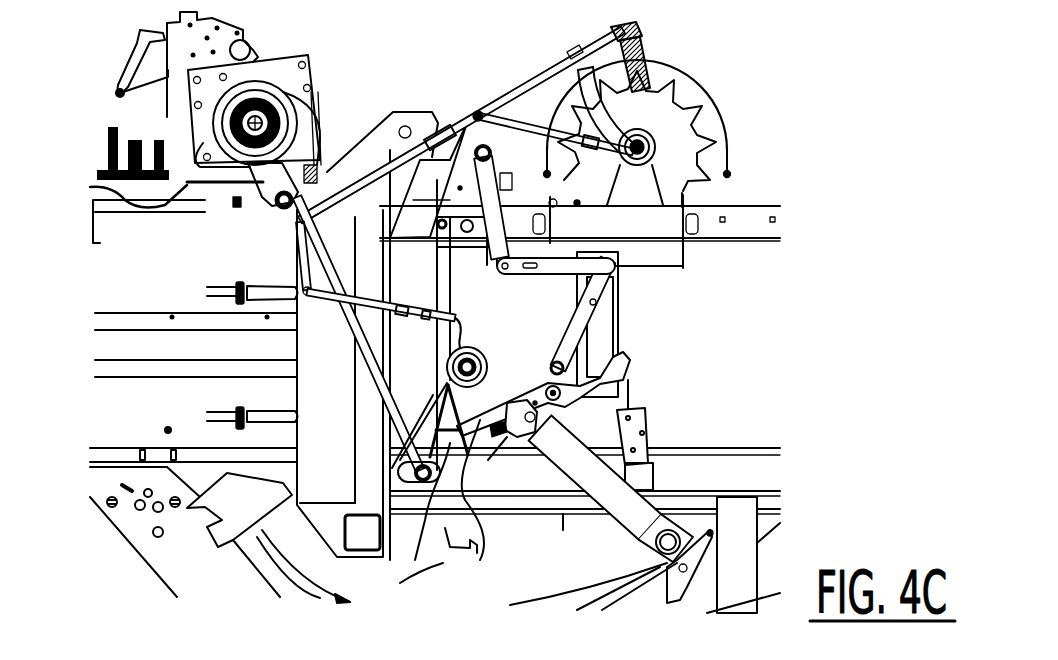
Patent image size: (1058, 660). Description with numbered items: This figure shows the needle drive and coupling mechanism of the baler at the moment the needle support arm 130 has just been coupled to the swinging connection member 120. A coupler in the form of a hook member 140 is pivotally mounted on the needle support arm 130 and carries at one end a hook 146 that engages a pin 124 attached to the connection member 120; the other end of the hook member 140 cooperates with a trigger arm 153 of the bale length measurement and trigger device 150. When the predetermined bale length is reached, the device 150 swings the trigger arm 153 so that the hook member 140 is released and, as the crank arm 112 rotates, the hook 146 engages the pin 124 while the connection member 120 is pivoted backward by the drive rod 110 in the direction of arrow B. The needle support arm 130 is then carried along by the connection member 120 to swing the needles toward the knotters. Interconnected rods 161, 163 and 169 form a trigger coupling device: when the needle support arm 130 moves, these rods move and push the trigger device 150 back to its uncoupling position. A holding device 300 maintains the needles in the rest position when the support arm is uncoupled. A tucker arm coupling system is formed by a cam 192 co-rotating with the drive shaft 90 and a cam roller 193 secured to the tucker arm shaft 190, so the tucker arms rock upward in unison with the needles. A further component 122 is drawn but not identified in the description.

The drive shaft 90 is at (256, 122).
The crank arm 112 is at (243, 168).
The tucker arm shaft 190 is at (153, 187).
The cam roller 193 is at (208, 200).
The cam 192 is at (327, 105).
The coupling rod 169 is at (420, 143).
The bale length measurement and trigger device 150 is at (800, 90).
The coupling rod 163 is at (305, 268).
The coupling rod 161 is at (395, 318).
The drive rod 110 is at (385, 400).
The arrow B is at (392, 462).
The roller 122 is at (470, 367).
The trigger arm 153 is at (590, 313).
The hook member 140 is at (600, 384).
The needle support arm 130 is at (645, 522).
The holding device 300 is at (678, 583).
The pin 124 is at (498, 433).
The hook 146 is at (500, 490).
The connection member 120 is at (452, 448).